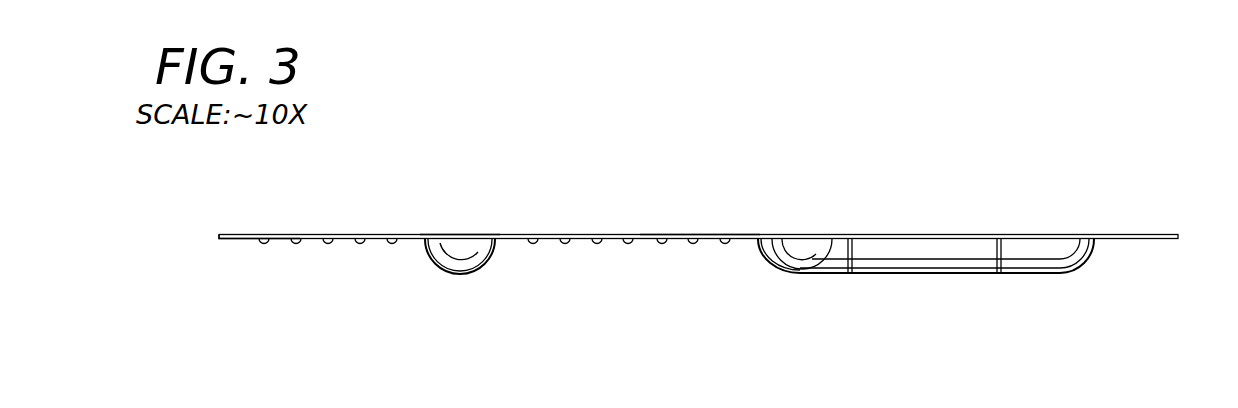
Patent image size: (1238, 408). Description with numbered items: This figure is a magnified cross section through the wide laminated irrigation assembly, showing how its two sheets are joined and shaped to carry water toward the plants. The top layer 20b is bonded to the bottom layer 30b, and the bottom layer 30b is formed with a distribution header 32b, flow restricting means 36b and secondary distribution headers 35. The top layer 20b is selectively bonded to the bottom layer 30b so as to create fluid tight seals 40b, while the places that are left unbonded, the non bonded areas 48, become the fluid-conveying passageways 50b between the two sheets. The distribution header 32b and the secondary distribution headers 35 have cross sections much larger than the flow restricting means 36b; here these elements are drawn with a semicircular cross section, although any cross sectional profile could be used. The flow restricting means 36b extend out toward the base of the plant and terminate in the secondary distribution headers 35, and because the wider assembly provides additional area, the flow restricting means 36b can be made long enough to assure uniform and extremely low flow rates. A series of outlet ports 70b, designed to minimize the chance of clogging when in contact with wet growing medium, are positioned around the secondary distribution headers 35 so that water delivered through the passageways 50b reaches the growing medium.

The top layer 20b is at (252, 234).
The bottom layer 30b is at (243, 239).
The flow restricting means 36b is at (312, 240).
The non bonded areas 48 is at (465, 235).
The distribution header 32b is at (463, 273).
The fluid-conveying passageways 50b is at (550, 240).
The fluid tight seals 40b is at (678, 235).
The secondary distribution headers 35 is at (797, 274).
The outlet ports 70b is at (1027, 274).